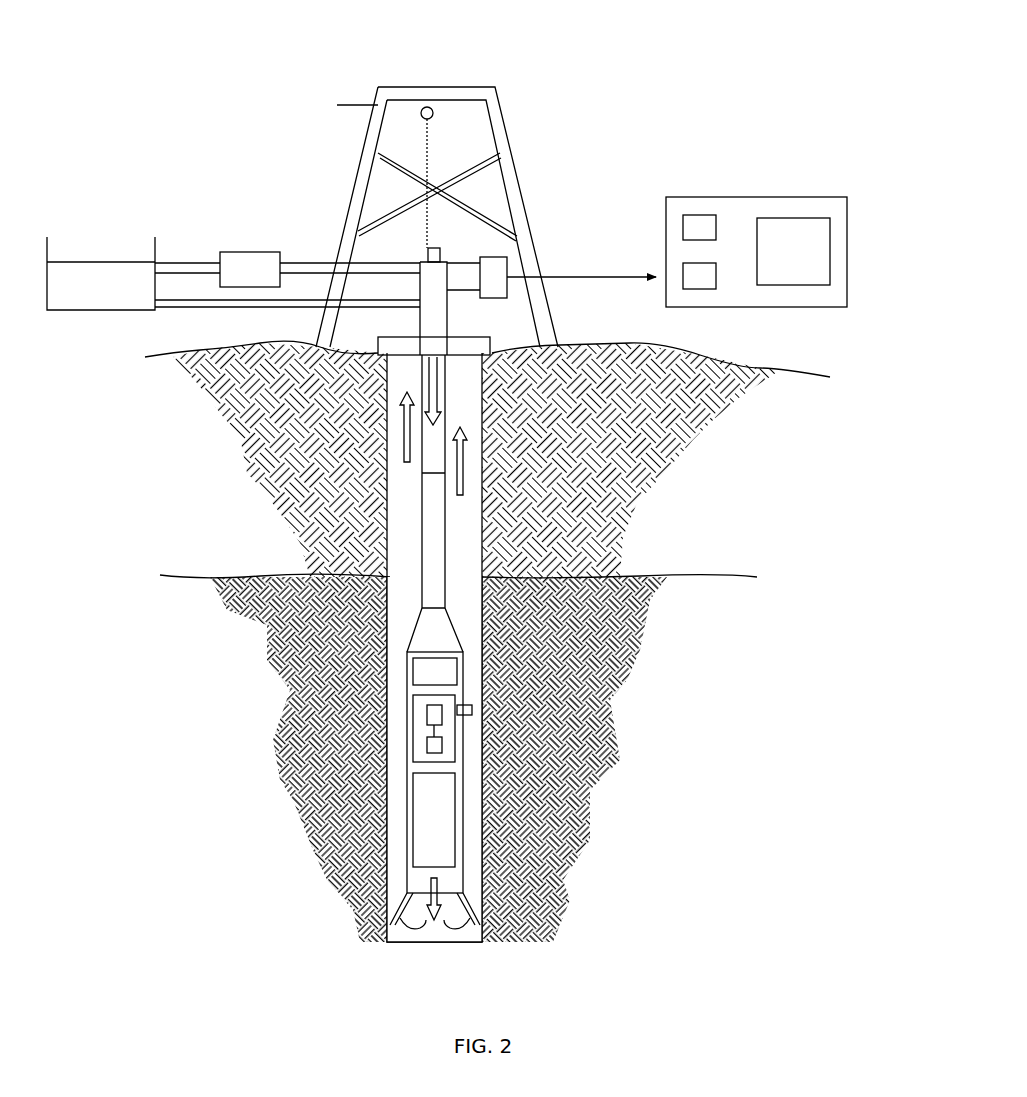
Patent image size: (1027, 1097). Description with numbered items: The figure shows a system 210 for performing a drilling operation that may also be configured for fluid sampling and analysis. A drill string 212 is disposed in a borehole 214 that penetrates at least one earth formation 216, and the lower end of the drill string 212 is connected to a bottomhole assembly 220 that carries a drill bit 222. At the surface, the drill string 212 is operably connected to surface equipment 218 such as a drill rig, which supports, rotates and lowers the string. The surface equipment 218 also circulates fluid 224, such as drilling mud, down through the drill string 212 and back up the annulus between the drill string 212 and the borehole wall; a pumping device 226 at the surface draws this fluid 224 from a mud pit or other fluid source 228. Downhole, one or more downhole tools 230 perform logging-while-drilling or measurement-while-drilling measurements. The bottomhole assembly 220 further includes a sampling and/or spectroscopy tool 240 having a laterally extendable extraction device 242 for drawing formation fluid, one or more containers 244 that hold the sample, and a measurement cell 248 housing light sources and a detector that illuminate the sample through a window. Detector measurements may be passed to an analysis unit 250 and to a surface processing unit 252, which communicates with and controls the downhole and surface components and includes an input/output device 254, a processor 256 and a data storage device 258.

The system 210 is at (640, 100).
The drill string 212 is at (445, 547).
The borehole 214 is at (483, 399).
The earth formation 216 is at (662, 681).
The surface equipment 218 is at (338, 172).
The bottomhole assembly 220 is at (410, 640).
The drill bit 222 is at (470, 905).
The fluid 224 is at (482, 480).
The pumping device 226 is at (220, 258).
The fluid source 228 is at (87, 272).
The downhole tool 230 is at (410, 797).
The sampling and/or spectroscopy tool 240 is at (410, 745).
The laterally extendable extraction device 242 is at (475, 710).
The container 244 is at (440, 718).
The measurement cell 248 is at (442, 752).
The analysis unit 250 is at (413, 685).
The surface processing unit 252 is at (758, 197).
The input/output device 254 is at (695, 278).
The processor 256 is at (700, 222).
The data storage device 258 is at (820, 248).